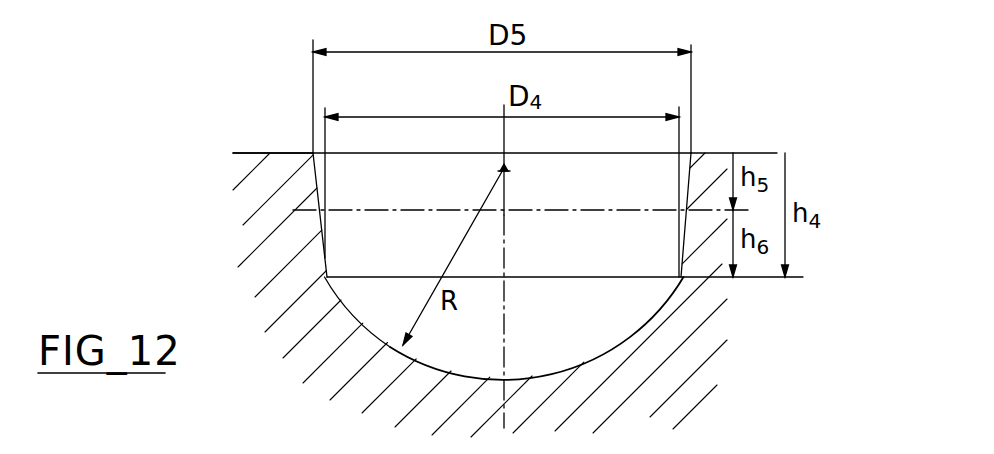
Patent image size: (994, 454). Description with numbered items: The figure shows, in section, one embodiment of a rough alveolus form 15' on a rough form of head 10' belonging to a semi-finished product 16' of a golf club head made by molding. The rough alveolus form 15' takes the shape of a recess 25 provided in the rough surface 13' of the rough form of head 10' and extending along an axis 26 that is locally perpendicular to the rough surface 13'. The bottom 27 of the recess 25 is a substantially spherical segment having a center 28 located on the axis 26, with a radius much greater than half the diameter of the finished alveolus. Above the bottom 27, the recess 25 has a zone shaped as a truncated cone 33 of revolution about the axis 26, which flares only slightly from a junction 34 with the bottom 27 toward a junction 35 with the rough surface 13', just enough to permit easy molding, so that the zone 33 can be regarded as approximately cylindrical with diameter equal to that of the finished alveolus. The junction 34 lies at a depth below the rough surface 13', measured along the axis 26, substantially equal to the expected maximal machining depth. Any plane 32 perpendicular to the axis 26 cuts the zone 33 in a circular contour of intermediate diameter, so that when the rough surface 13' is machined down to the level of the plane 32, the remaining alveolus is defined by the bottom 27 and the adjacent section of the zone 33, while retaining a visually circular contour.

The rough form of head 10' is at (461, 295).
The rough surface 13' is at (273, 117).
The rough alveolus form 15' is at (647, 176).
The semi-finished product 16' is at (746, 98).
The recess 25 is at (420, 175).
The axis 26 is at (506, 232).
The bottom 27 is at (560, 367).
The center 28 is at (510, 171).
The plane 32 is at (598, 215).
The truncated cone zone 33 is at (324, 218).
The junction with the bottom 34 is at (330, 277).
The junction with the rough surface 35 is at (313, 153).